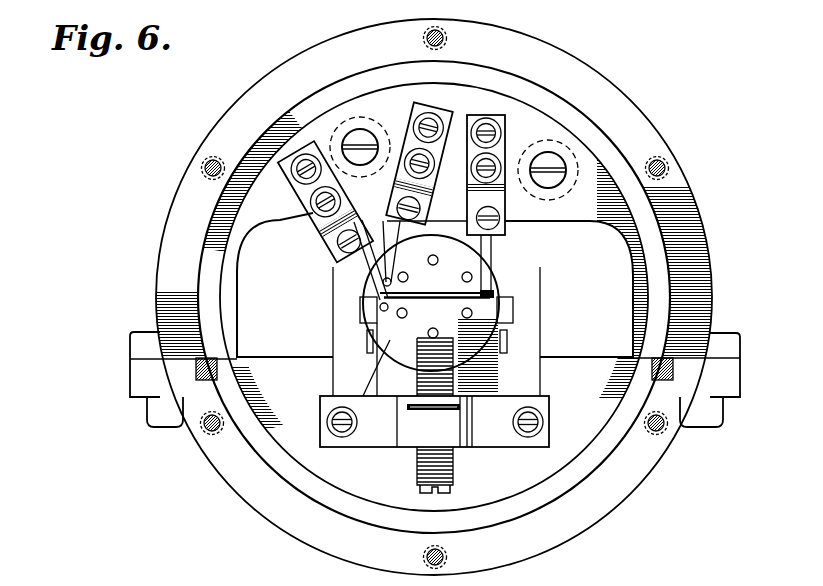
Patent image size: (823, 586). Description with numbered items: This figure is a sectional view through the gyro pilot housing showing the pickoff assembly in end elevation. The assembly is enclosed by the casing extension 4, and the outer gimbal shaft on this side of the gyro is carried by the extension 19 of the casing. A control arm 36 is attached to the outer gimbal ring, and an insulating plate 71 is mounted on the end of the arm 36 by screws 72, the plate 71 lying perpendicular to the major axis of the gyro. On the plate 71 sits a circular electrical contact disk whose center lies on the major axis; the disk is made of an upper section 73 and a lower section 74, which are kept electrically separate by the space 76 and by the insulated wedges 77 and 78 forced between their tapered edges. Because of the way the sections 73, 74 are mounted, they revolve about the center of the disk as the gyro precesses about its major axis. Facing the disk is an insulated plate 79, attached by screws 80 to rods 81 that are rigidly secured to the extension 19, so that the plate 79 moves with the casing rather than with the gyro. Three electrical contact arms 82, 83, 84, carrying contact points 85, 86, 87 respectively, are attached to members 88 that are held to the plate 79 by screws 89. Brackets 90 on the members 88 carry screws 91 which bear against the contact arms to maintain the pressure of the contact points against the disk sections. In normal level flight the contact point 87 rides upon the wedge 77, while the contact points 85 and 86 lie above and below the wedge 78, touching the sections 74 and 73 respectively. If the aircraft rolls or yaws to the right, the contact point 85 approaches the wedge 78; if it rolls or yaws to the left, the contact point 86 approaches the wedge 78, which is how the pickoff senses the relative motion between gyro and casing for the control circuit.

The casing extension 4 is at (640, 120).
The extension of casing 19 is at (240, 243).
The control arm 36 is at (380, 433).
The insulating plate 71 is at (373, 370).
The screws 72 is at (336, 416).
The upper section 73 is at (488, 270).
The lower section 74 is at (394, 346).
The space 76 is at (426, 298).
The insulated wedge 77 is at (507, 316).
The insulated wedge 78 is at (412, 291).
The insulated plate 79 is at (583, 212).
The screws 80 is at (357, 135).
The rods 81 is at (380, 128).
The electrical contact arm 82 is at (360, 267).
The electrical contact arm 83 is at (402, 240).
The electrical contact arm 84 is at (489, 278).
The contact point 85 is at (372, 315).
The contact point 86 is at (360, 288).
The contact point 87 is at (470, 316).
The members 88 is at (303, 197).
The screws 89 is at (303, 162).
The brackets 90 is at (332, 240).
The screws 91 is at (338, 252).